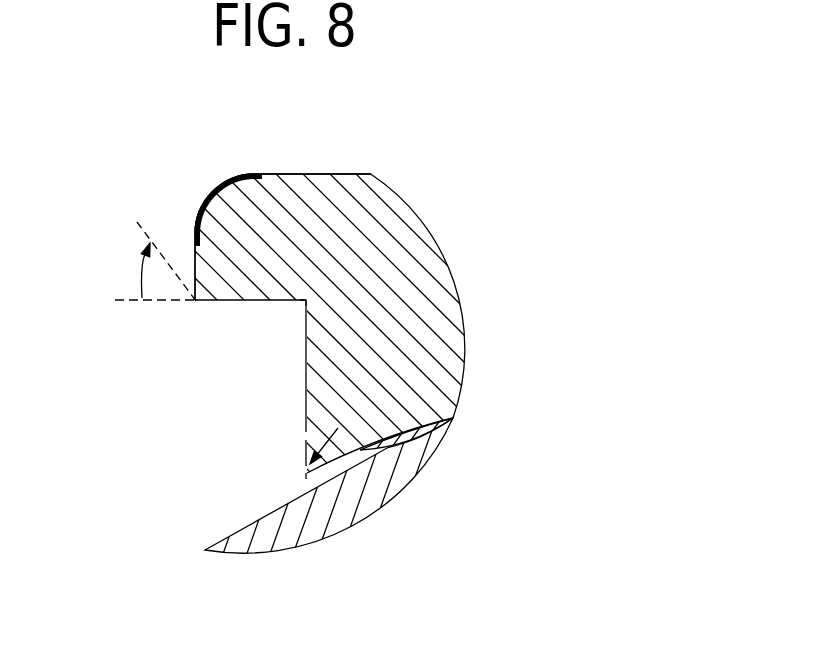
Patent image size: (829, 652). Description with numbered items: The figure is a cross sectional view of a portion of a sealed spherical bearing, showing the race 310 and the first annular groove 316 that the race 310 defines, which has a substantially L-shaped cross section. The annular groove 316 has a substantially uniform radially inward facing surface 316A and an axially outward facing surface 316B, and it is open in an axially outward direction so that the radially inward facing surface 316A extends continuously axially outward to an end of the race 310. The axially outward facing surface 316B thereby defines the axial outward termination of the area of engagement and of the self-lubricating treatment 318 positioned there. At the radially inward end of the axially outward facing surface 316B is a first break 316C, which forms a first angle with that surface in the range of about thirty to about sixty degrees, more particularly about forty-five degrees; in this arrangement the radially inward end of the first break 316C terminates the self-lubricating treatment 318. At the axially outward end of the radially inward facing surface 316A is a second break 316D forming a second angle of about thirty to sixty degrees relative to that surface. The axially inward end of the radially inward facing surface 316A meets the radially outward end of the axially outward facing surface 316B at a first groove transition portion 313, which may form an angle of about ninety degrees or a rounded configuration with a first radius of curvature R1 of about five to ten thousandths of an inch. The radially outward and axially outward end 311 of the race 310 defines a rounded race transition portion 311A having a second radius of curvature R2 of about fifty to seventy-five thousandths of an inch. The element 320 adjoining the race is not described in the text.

The race 310 is at (458, 297).
The radially outward and axially outward end of race 311 is at (246, 152).
The race transition portion 311A is at (203, 208).
The second radius of curvature R2 is at (212, 175).
The first groove transition portion 313 is at (306, 298).
The first annular groove 316 is at (235, 349).
The radially inward facing surface 316A is at (238, 301).
The axially outward facing surface 316B is at (305, 403).
The first break 316C is at (306, 478).
The second break 316D is at (195, 284).
The first radius of curvature R1 is at (297, 308).
The self-lubricating treatment 318 is at (453, 420).
The mating member 320 is at (383, 483).